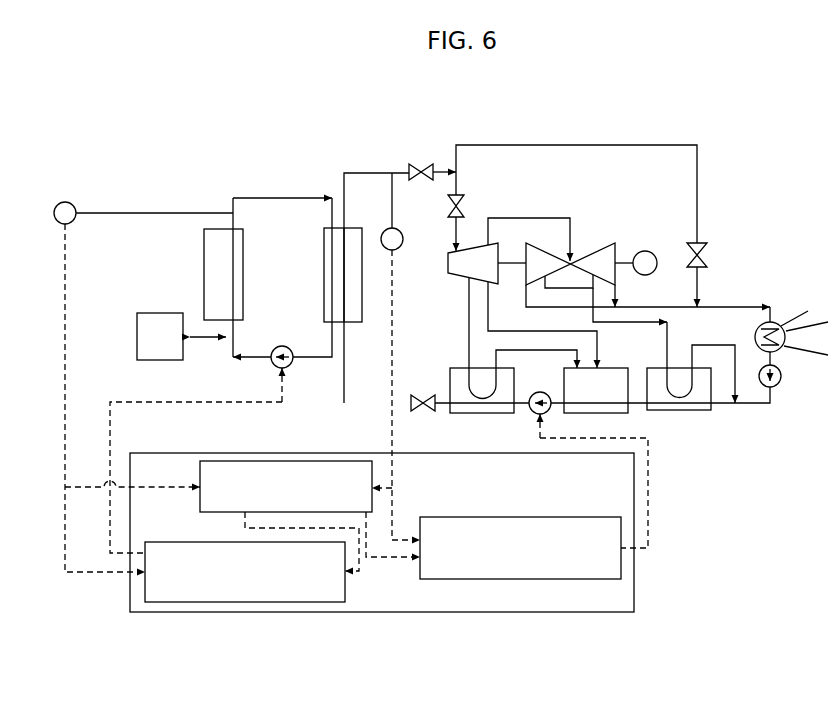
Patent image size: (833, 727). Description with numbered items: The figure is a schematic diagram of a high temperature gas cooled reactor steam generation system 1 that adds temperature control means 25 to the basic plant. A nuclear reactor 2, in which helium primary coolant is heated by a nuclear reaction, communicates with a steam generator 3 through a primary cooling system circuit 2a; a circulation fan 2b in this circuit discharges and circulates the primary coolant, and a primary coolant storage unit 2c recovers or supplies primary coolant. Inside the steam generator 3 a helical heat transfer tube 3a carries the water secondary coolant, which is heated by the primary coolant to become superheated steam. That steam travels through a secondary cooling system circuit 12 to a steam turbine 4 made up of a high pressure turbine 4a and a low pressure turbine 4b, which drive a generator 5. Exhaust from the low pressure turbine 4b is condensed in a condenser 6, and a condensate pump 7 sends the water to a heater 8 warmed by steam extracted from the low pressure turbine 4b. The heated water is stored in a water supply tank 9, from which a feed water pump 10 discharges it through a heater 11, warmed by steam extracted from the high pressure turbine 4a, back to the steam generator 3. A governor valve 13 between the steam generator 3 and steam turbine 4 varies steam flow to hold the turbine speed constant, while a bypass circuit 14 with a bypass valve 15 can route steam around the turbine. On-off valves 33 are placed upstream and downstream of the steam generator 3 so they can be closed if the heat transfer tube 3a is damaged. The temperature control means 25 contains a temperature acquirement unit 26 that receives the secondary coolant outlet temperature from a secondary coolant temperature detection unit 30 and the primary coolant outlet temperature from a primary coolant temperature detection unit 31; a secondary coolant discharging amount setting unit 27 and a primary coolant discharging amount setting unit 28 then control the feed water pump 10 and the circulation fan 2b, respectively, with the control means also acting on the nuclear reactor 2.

The high temperature gas cooled reactor steam generation system 1 is at (727, 115).
The nuclear reactor 2 is at (244, 241).
The primary cooling system circuit 2a is at (250, 198).
The circulation fan 2b is at (283, 346).
The primary coolant storage unit 2c is at (160, 313).
The steam generator 3 is at (322, 249).
The heat transfer tube 3a is at (346, 291).
The steam turbine 4 is at (529, 238).
The high pressure turbine 4a is at (457, 280).
The low pressure turbine 4b is at (590, 249).
The generator 5 is at (656, 254).
The condenser 6 is at (796, 319).
The condensate pump 7 is at (782, 377).
The heater 8 is at (711, 410).
The water supply tank 9 is at (628, 413).
The feed water pump 10 is at (542, 392).
The heater 11 is at (483, 413).
The secondary cooling system circuit 12 is at (373, 265).
The governor valve 13 is at (463, 199).
The bypass circuit 14 is at (632, 145).
The bypass valve 15 is at (706, 248).
The temperature control means 25 is at (634, 572).
The temperature acquirement unit 26 is at (200, 472).
The secondary coolant discharging amount setting unit 27 is at (586, 517).
The primary coolant discharging amount setting unit 28 is at (173, 542).
The secondary coolant temperature detection unit 30 is at (403, 238).
The primary coolant temperature detection unit 31 is at (66, 202).
The on-off valves 33 is at (421, 165).